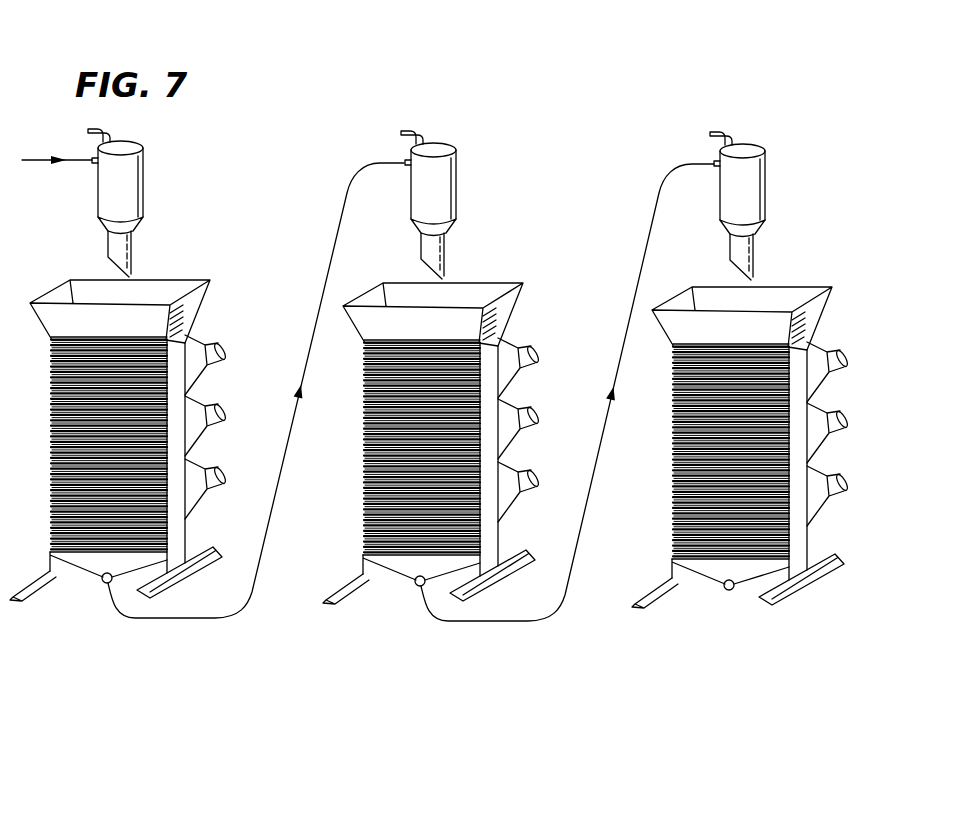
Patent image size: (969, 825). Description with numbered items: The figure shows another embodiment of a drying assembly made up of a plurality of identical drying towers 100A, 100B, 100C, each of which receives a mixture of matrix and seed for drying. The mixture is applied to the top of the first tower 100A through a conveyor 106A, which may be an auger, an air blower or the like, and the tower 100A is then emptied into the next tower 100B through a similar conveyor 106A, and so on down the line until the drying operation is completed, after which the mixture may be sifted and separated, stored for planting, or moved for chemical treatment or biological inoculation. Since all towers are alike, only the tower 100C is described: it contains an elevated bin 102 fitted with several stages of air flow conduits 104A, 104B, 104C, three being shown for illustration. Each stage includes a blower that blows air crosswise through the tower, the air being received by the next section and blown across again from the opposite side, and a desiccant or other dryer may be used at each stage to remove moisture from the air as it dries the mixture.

The drying tower 100A is at (160, 270).
The drying tower 100B is at (485, 272).
The drying tower 100C is at (785, 277).
The elevated bin 102 is at (87, 277).
The air flow conduit 104A is at (206, 379).
The air flow conduit 104B is at (203, 445).
The air flow conduit 104C is at (200, 516).
The conveyor 106A is at (154, 192).